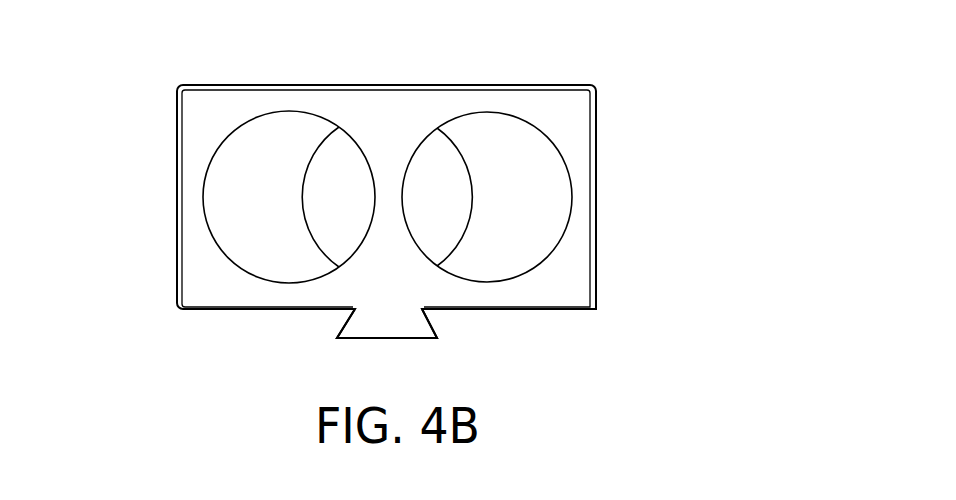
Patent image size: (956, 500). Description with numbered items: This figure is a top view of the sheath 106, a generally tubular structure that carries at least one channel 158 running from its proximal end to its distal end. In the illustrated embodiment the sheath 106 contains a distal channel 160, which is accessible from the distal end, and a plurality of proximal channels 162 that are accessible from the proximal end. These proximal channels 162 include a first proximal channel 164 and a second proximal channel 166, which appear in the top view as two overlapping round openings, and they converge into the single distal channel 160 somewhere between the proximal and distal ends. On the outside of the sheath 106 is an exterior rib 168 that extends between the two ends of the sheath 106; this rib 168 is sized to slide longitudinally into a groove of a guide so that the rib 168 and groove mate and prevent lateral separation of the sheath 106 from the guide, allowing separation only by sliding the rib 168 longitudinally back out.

The sheath 106 is at (620, 105).
The channel 158 is at (412, 127).
The distal channel 160 is at (302, 242).
The proximal channels 162 is at (422, 260).
The first proximal channel 164 is at (227, 208).
The second proximal channel 166 is at (547, 203).
The exterior rib 168 is at (433, 328).